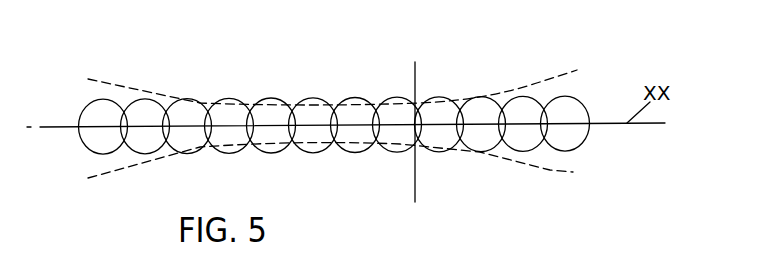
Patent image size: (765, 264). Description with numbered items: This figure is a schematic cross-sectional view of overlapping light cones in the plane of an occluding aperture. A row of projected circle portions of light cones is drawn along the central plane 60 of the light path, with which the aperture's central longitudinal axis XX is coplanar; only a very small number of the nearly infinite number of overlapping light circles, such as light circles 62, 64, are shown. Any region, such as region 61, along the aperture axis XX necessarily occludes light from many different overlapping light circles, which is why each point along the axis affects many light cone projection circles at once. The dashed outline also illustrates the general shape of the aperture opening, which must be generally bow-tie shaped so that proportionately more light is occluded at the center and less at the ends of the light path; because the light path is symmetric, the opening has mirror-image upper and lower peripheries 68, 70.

The central plane of the light path 60 is at (608, 123).
The region along the aperture axis 61 is at (415, 75).
The overlapping light circle 62 is at (390, 151).
The overlapping light circle 64 is at (435, 153).
The upper periphery of the aperture opening 68 is at (540, 82).
The lower periphery of the aperture opening 70 is at (550, 170).